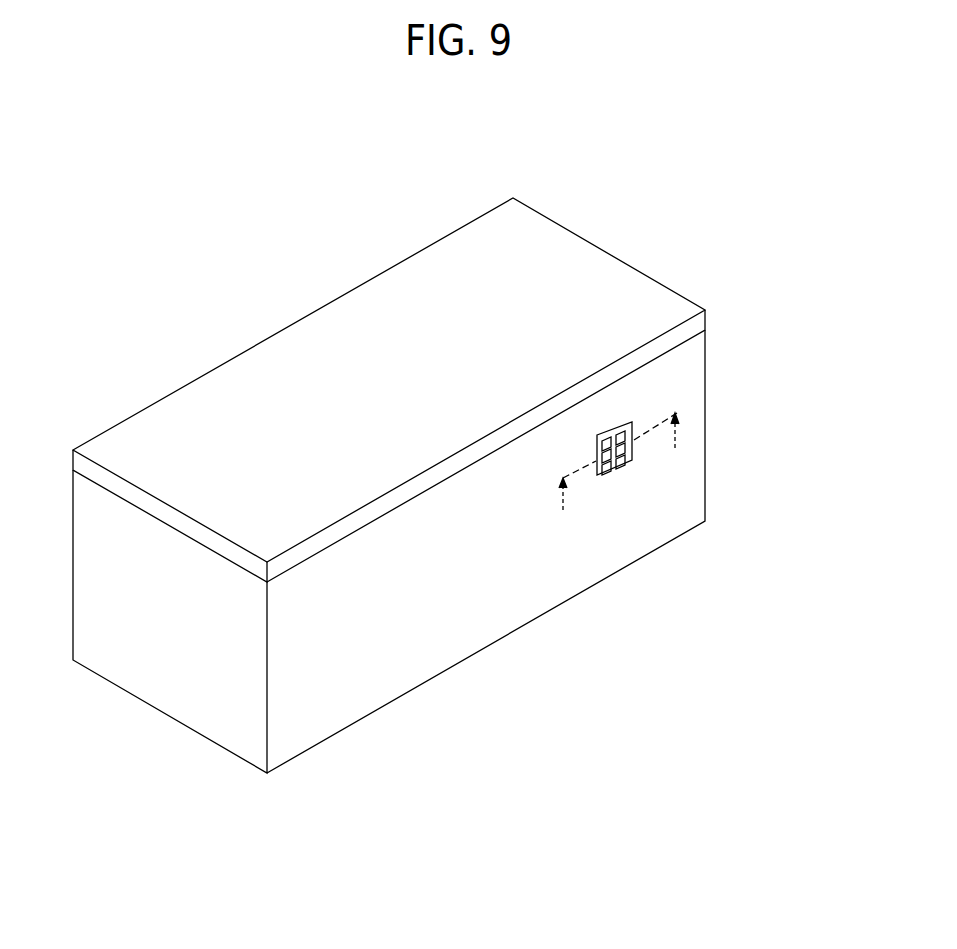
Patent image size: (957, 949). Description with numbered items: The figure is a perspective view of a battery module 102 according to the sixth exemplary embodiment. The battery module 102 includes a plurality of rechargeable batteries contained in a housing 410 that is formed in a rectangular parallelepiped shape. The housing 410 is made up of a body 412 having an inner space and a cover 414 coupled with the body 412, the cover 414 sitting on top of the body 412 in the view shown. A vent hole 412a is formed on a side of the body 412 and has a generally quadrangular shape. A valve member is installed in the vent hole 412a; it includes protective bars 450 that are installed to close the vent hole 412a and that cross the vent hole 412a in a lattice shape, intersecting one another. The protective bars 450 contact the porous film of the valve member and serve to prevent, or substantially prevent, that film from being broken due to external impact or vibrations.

The battery module 102 is at (716, 428).
The housing 410 is at (785, 275).
The body 412 is at (683, 364).
The vent hole 412a is at (620, 468).
The cover 414 is at (663, 304).
The protective bar 450 is at (608, 468).